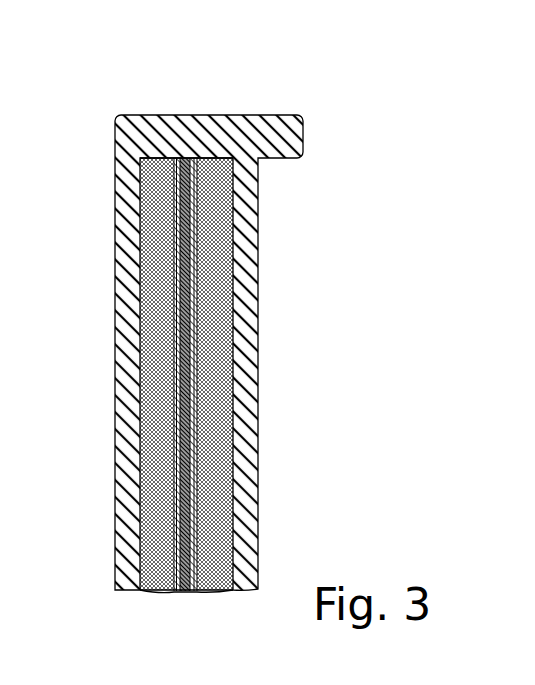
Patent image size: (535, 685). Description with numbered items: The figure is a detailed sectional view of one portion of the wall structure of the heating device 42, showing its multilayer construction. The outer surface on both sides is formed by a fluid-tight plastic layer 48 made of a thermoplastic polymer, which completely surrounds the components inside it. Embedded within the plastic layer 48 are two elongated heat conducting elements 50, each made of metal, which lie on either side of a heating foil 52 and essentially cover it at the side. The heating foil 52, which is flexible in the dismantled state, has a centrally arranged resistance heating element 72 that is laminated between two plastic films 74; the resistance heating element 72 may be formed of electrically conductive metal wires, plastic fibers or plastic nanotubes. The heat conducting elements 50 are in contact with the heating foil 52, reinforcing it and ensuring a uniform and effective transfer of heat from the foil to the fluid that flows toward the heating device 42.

The heating device 42 is at (310, 120).
The plastic layer 48 is at (120, 427).
The heat conducting element 50 is at (150, 325).
The heating foil 52 is at (174, 605).
The resistance heating element 72 is at (190, 410).
The plastic film 74 is at (177, 510).